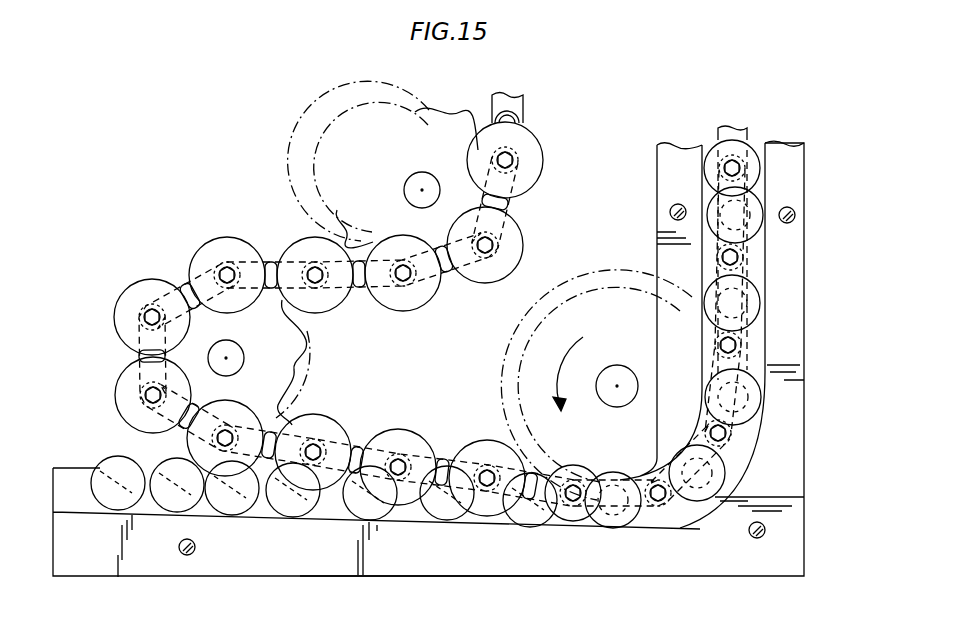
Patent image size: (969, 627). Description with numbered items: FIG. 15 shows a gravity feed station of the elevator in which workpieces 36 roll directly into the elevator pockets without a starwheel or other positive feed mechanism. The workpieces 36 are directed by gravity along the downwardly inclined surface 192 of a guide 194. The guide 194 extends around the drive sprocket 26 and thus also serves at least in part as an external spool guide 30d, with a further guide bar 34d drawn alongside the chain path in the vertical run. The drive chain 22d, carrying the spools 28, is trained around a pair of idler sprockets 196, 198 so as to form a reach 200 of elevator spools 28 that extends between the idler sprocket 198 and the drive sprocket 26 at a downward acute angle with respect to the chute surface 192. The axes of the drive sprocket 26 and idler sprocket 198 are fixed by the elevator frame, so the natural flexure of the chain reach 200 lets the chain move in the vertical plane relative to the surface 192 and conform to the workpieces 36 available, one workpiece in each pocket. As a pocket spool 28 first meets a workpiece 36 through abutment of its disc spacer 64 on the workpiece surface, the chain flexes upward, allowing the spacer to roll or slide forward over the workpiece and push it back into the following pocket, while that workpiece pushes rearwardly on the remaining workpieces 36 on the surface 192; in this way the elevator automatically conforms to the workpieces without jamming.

The drive chain 22d is at (527, 113).
The idler sprocket 196 is at (377, 175).
The idler sprocket 198 is at (277, 362).
The spool 28 is at (332, 302).
The drive sprocket 26 is at (538, 357).
The guide bar 34d is at (667, 264).
The external spool guide 30d is at (790, 297).
The disc spacer 64 is at (316, 447).
The chain reach 200 is at (437, 445).
The workpiece 36 is at (160, 465).
The downwardly inclined surface 192 is at (148, 510).
The guide 194 is at (313, 563).